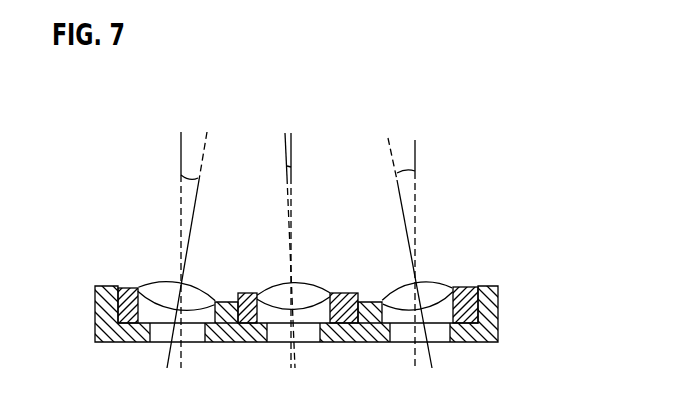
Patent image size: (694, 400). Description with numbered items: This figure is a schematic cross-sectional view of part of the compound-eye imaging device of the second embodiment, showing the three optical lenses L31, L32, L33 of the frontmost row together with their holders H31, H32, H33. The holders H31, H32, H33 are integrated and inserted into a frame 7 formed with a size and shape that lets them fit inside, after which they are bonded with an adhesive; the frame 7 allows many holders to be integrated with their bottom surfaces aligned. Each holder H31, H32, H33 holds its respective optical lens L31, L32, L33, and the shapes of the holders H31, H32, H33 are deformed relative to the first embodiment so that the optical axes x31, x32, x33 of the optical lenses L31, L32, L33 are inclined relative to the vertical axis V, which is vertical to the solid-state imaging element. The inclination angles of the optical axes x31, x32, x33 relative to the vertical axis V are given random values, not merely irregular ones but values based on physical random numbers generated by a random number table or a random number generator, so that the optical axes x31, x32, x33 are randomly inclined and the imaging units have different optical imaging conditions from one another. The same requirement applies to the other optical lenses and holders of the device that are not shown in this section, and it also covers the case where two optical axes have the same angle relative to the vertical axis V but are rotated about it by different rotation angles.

The frame 7 is at (492, 307).
The holder H31 is at (128, 288).
The holder H32 is at (240, 293).
The holder H33 is at (465, 288).
The optical lens L31 is at (163, 283).
The optical lens L32 is at (313, 287).
The optical lens L33 is at (433, 286).
The vertical axis V is at (181, 138).
The optical axis x31 is at (203, 147).
The optical axis x32 is at (287, 188).
The optical axis x33 is at (397, 190).